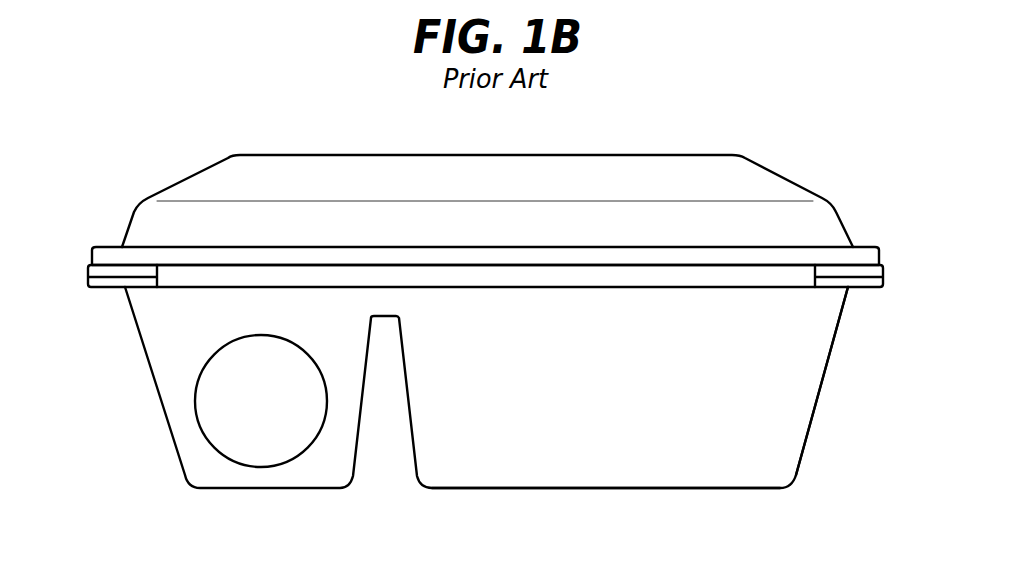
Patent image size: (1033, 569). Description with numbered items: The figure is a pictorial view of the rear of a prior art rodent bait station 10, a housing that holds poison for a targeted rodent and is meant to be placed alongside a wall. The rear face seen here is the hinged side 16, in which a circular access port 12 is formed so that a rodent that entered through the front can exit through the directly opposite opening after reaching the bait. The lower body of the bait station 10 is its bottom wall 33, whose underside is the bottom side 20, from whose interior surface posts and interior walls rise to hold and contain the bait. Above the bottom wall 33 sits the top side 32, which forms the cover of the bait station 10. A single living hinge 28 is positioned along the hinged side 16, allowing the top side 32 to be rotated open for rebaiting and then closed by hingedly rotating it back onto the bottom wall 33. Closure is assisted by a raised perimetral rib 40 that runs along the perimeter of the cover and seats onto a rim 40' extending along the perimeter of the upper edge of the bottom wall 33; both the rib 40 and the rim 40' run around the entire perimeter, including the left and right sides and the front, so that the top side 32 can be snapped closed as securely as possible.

The bait station 10 is at (727, 103).
The access port 12 is at (223, 430).
The hinged side 16 is at (772, 473).
The bottom side 20 is at (472, 490).
The living hinge 28 is at (195, 276).
The top side 32 is at (770, 178).
The bottom wall 33 is at (825, 380).
The raised perimetral rib 40 is at (481, 235).
The rim 40' is at (491, 296).